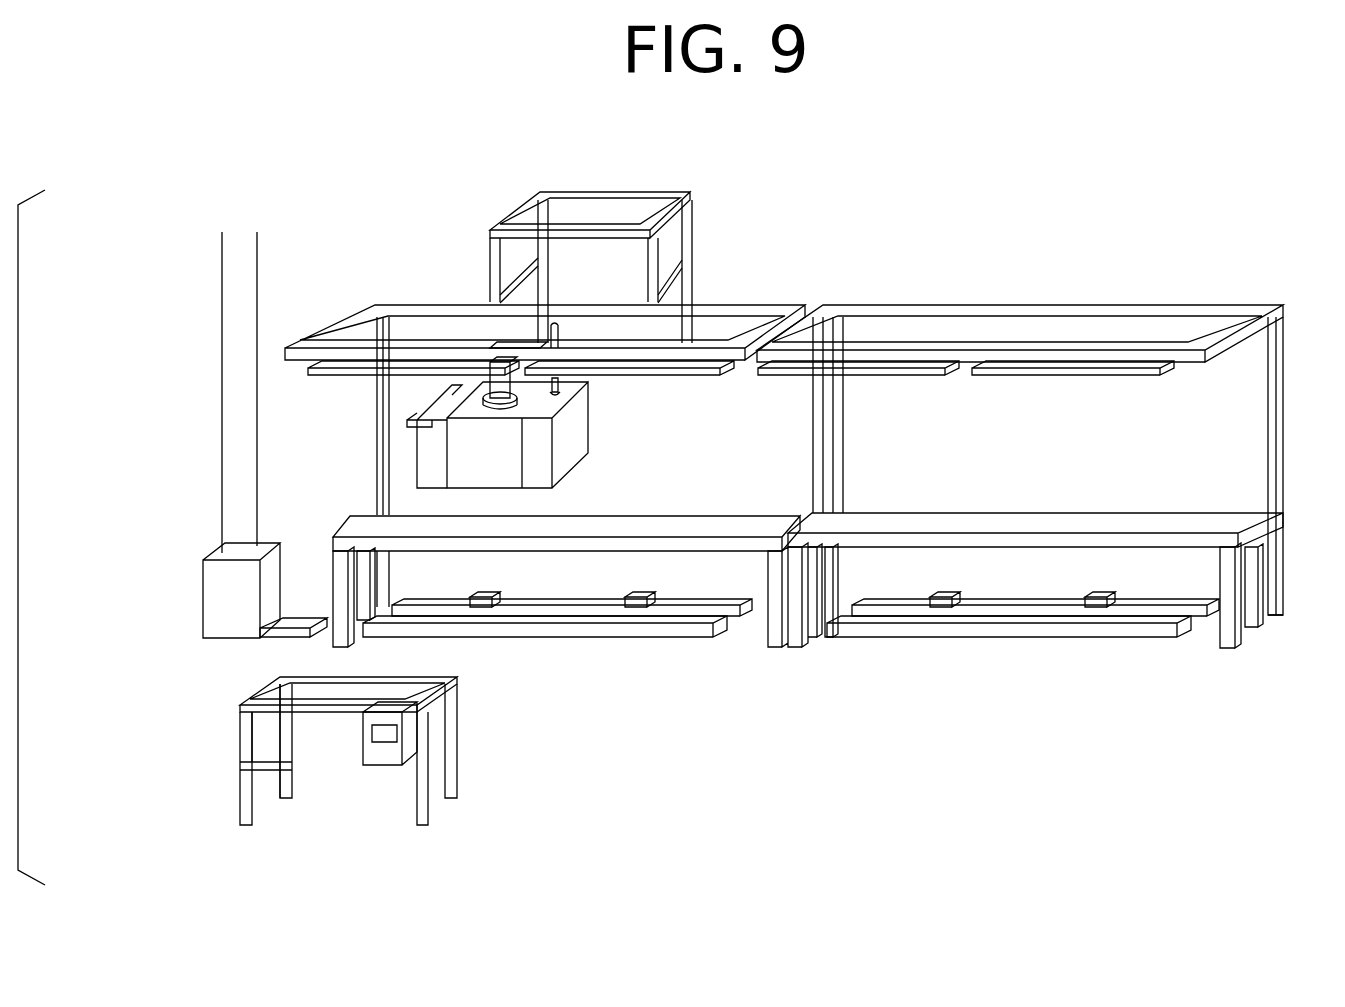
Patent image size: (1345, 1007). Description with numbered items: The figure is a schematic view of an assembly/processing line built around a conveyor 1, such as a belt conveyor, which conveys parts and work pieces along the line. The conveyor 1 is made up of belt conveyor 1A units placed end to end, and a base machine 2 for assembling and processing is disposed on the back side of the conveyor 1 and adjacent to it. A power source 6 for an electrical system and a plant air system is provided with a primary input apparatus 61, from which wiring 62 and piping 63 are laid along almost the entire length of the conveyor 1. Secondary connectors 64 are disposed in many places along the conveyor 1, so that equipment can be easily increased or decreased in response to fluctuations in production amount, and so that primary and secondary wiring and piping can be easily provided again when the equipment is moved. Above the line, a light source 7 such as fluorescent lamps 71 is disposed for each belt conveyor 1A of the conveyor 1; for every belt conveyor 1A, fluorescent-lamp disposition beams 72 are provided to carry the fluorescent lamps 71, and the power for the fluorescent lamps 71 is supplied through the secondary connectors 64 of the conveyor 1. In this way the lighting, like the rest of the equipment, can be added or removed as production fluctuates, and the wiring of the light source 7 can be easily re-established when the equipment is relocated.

The conveyor 1 is at (808, 572).
The belt conveyor 1A is at (712, 540).
The base machine 2 is at (610, 454).
The power source 6 is at (186, 525).
The primary input apparatus 61 is at (290, 635).
The wiring 62 is at (645, 628).
The piping 63 is at (578, 612).
The secondary connectors 64 is at (490, 594).
The light source 7 is at (811, 408).
The fluorescent lamps 71 is at (355, 372).
The fluorescent-lamp disposition beams 72 is at (405, 306).